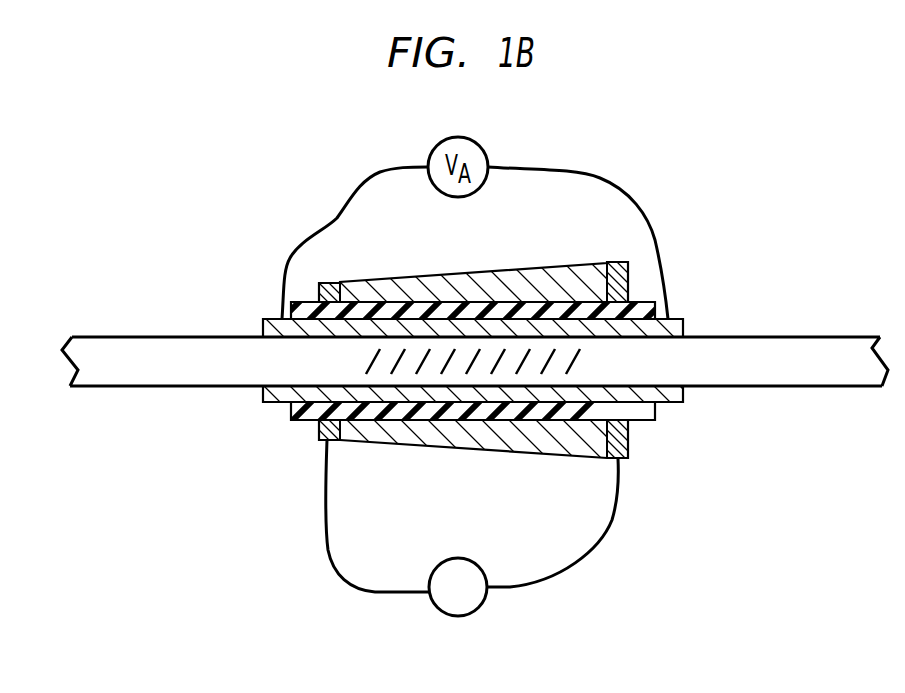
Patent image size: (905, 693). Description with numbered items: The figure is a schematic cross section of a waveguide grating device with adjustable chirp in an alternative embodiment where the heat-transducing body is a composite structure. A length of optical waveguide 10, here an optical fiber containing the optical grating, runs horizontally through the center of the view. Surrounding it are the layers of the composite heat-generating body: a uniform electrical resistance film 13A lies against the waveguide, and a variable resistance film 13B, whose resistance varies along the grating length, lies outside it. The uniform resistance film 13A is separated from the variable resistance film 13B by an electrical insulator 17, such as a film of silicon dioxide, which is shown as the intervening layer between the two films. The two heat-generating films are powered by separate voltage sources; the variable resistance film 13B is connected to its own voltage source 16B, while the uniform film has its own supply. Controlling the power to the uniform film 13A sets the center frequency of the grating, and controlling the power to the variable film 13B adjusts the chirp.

The optical waveguide 10 is at (152, 336).
The uniform electrical resistance film 13A is at (690, 321).
The variable resistance film 13B is at (385, 279).
The electrical insulator 17 is at (657, 421).
The voltage source 16B is at (490, 593).